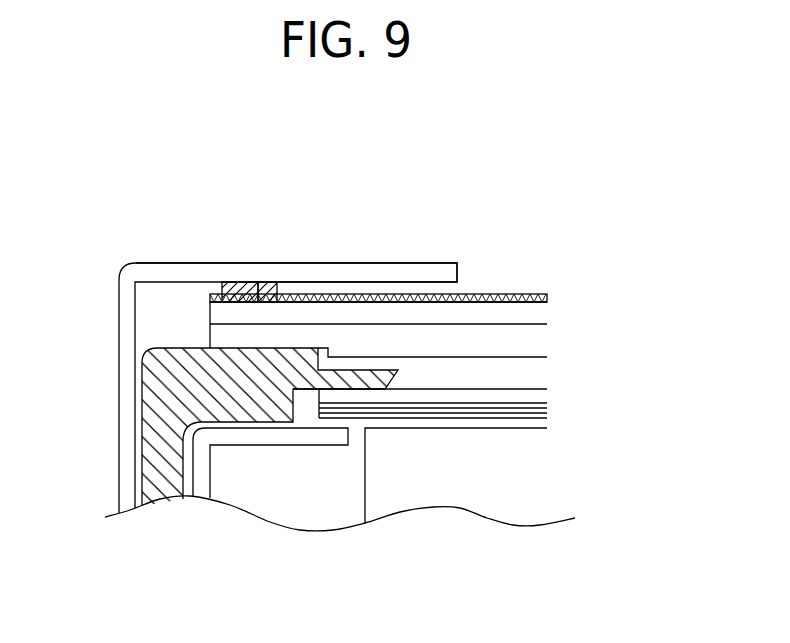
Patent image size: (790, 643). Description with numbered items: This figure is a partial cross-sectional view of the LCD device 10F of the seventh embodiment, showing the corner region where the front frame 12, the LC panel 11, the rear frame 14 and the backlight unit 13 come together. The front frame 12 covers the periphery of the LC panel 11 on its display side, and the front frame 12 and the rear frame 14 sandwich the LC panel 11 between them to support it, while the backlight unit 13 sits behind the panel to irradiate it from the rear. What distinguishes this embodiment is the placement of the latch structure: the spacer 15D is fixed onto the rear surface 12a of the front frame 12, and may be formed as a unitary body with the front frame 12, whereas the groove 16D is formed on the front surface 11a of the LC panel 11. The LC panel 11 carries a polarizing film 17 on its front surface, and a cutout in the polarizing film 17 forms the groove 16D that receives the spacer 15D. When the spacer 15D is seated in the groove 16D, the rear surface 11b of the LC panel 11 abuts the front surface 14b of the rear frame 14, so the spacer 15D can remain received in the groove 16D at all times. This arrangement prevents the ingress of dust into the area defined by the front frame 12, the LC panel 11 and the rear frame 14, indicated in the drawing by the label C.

The LCD device 10F is at (357, 177).
The front frame 12 is at (127, 266).
The rear surface of the front frame 12a is at (434, 280).
The groove 16D is at (228, 281).
The spacer 15D is at (260, 281).
The polarizing film 17 is at (548, 298).
The LC panel 11 is at (556, 325).
The front surface of the LC panel 11a is at (507, 300).
The rear surface of the LC panel 11b is at (531, 359).
The rear frame 14 is at (163, 487).
The front surface of the rear frame 14b is at (263, 351).
The backlight unit 13 is at (483, 491).
The clearance C is at (169, 319).